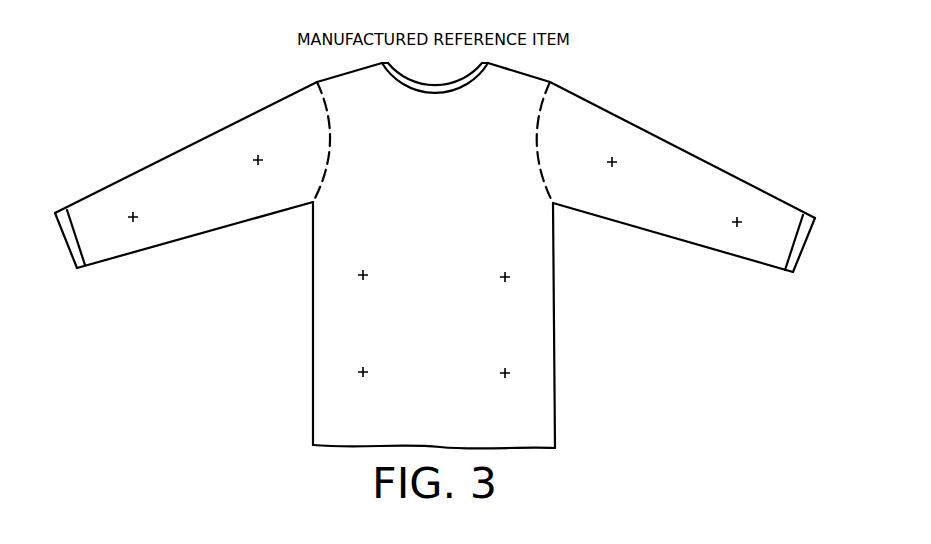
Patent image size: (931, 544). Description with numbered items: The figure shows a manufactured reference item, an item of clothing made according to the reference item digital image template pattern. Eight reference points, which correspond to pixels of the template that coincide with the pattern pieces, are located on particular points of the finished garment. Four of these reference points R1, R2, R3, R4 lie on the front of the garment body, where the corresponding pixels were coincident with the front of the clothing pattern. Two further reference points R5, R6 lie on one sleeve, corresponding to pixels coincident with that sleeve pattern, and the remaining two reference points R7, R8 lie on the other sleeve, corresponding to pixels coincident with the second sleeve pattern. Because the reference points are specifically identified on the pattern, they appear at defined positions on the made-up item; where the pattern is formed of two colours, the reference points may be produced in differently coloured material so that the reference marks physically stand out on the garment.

The pixel / reference point R1 is at (367, 270).
The pixel / reference point R2 is at (502, 275).
The pixel / reference point R3 is at (367, 367).
The pixel / reference point R4 is at (502, 371).
The pixel / reference point R5 is at (262, 157).
The pixel / reference point R6 is at (138, 213).
The pixel / reference point R7 is at (608, 158).
The pixel / reference point R8 is at (732, 218).